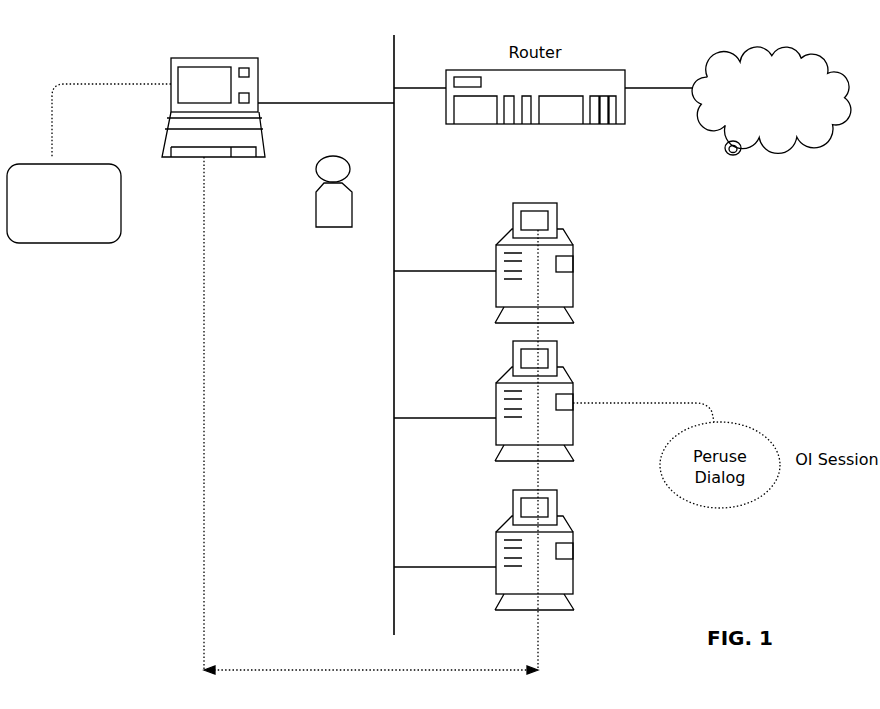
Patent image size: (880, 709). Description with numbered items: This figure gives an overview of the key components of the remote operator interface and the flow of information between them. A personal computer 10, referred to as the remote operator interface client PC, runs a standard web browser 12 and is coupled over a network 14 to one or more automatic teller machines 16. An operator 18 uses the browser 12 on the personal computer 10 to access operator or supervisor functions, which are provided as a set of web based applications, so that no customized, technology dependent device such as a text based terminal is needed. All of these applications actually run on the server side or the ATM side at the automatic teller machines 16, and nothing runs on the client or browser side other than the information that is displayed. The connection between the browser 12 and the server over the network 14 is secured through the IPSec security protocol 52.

The personal computer 10 is at (258, 76).
The web browser 12 is at (59, 278).
The network 14 is at (771, 156).
The automatic teller machines 16 is at (583, 569).
The operator 18 is at (316, 208).
The IPSec security protocol 52 is at (290, 635).